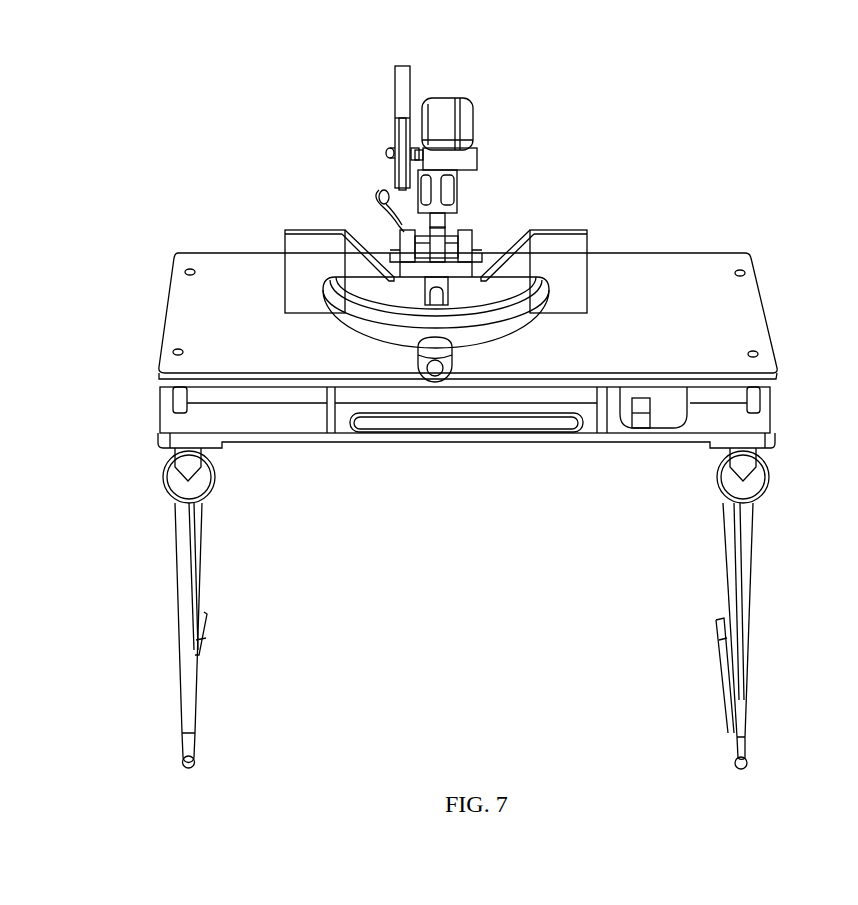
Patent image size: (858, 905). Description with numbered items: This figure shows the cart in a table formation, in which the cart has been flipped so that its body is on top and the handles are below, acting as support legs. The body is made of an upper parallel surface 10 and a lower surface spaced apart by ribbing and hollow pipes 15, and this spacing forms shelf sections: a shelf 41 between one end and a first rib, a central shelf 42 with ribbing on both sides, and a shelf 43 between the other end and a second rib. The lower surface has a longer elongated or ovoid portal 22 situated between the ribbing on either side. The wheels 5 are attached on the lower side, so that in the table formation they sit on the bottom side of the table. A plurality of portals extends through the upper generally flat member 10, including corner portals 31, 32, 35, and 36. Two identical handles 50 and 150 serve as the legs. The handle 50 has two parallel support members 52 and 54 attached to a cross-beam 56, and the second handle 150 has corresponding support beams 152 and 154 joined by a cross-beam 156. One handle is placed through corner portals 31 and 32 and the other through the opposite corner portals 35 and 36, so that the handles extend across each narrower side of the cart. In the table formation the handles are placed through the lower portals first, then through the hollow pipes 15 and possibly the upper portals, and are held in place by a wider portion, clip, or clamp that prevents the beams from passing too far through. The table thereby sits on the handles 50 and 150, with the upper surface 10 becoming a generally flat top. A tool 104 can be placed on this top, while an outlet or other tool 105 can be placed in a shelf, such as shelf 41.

The wheels 5 is at (172, 480).
The upper parallel surface 10 is at (163, 312).
The pipes 15 is at (178, 395).
The elongated portal 22 is at (503, 422).
The corner portal 31 is at (757, 352).
The corner portal 32 is at (745, 270).
The corner portal 35 is at (185, 268).
The corner portal 36 is at (172, 355).
The shelf 41 is at (710, 398).
The central shelf 42 is at (357, 397).
The shelf 43 is at (280, 395).
The handle 50 is at (735, 636).
The support member 52 is at (732, 678).
The support member 54 is at (727, 530).
The cross-beam 56 is at (752, 570).
The tool 104 is at (447, 133).
The outlet or other tool 105 is at (660, 412).
The handle 150 is at (195, 635).
The support beam 152 is at (193, 753).
The support beam 154 is at (198, 593).
The cross-beam 156 is at (183, 638).